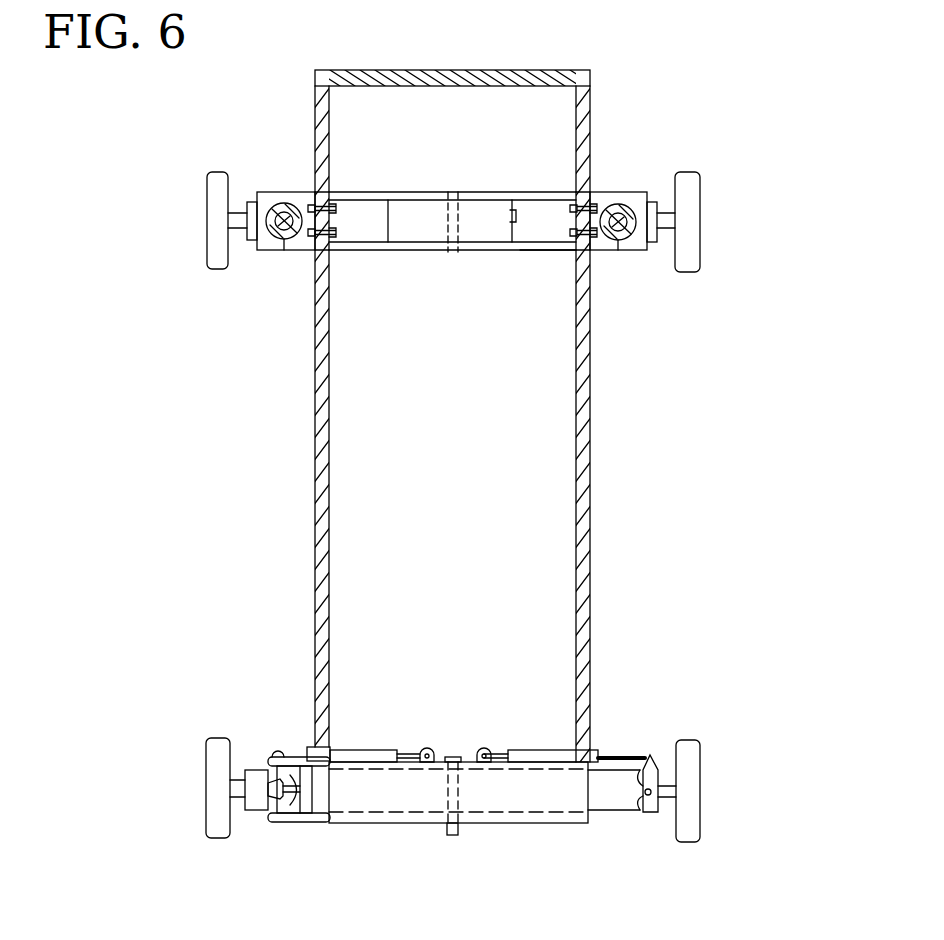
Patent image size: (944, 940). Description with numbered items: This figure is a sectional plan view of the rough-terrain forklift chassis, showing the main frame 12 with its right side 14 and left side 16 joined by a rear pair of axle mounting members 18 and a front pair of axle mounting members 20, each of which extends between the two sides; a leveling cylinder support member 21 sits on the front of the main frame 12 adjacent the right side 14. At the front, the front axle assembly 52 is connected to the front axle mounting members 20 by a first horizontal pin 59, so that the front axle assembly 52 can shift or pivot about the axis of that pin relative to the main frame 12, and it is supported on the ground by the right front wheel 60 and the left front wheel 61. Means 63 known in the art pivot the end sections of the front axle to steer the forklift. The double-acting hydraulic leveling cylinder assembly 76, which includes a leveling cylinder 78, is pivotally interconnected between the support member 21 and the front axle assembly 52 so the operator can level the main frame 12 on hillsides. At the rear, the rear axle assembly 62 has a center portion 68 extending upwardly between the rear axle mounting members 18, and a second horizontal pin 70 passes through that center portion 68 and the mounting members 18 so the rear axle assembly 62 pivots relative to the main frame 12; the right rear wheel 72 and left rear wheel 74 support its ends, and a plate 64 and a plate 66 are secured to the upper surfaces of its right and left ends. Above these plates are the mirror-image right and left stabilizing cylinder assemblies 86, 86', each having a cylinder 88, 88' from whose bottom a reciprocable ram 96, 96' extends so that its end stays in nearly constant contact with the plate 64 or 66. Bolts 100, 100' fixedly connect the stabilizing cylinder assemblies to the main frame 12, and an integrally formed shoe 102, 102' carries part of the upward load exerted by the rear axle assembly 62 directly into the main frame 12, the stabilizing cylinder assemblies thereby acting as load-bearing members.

The main frame 12 is at (462, 70).
The right side 14 is at (322, 497).
The left side 16 is at (585, 518).
The rear pair of axle mounting members 18 is at (437, 210).
The front pair of axle mounting members 20 is at (482, 752).
The leveling cylinder support member 21 is at (298, 755).
The front axle assembly 52 is at (619, 818).
The first horizontal pin 59 is at (450, 760).
The right front wheel 60 is at (206, 768).
The left front wheel 61 is at (700, 790).
The rear axle assembly 62 is at (556, 248).
The means for pivoting the end sections 63 is at (370, 750).
The plate 64 is at (258, 262).
The plate 66 is at (648, 252).
The center portion 68 is at (433, 238).
The second horizontal pin 70 is at (466, 255).
The right rear wheel 72 is at (222, 172).
The left rear wheel 74 is at (690, 212).
The leveling cylinder assembly 76 is at (254, 794).
The leveling cylinder 78 is at (306, 791).
The stabilizing cylinder assembly 86 is at (252, 290).
The stabilizing cylinder assembly 86' is at (656, 293).
The cylinder 88 is at (289, 189).
The cylinder 88' is at (672, 190).
The ram 96 is at (267, 190).
The ram 96' is at (628, 195).
The bolts 100 is at (343, 248).
The bolts 100' is at (554, 194).
The shoe 102 is at (350, 193).
The shoe 102' is at (621, 177).